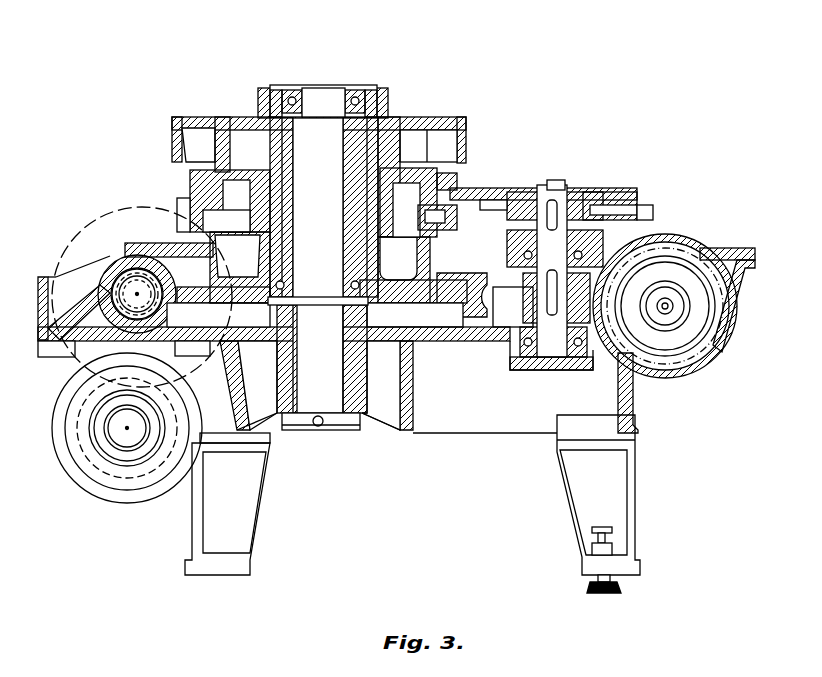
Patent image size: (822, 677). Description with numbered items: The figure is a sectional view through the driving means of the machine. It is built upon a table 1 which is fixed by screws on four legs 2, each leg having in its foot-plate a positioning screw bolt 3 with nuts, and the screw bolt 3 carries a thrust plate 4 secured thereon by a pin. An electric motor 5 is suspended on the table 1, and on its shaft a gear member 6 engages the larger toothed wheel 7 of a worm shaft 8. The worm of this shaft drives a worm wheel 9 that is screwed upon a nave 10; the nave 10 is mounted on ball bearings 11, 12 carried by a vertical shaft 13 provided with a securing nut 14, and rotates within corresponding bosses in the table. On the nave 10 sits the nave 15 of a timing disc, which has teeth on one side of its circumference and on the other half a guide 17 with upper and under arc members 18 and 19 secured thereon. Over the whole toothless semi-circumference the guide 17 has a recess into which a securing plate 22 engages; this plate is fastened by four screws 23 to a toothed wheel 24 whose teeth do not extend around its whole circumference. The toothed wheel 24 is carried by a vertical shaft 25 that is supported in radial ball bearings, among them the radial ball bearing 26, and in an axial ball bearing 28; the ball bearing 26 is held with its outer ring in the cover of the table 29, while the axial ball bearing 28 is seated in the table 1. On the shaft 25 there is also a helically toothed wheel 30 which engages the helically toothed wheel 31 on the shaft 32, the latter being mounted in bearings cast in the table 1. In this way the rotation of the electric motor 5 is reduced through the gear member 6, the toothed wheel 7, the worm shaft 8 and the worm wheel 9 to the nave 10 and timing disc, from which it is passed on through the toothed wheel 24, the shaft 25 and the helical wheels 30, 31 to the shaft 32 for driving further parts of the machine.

The table 1 is at (540, 417).
The legs 2 is at (632, 472).
The positioning screw bolt 3 is at (613, 533).
The thrust plate 4 is at (625, 586).
The electric motor 5 is at (117, 492).
The gear member 6 is at (95, 462).
The larger toothed wheel 7 is at (87, 230).
The worm shaft 8 is at (115, 290).
The worm wheel 9 is at (163, 270).
The nave 10 is at (240, 289).
The ball bearing 11 is at (292, 275).
The ball bearing 12 is at (358, 90).
The vertical shaft 13 is at (302, 398).
The securing nut 14 is at (350, 420).
The nave of timing disc 15 is at (215, 172).
The guide 17 is at (423, 212).
The upper arc member 18 is at (455, 178).
The under arc member 19 is at (449, 224).
The securing plate 22 is at (487, 197).
The screws 23 is at (603, 190).
The toothed wheel 24 is at (641, 205).
The vertical shaft 25 is at (551, 180).
The radial ball bearing 26 is at (520, 262).
The axial ball bearing 28 is at (528, 372).
The cover of the table 29 is at (696, 240).
The helically toothed wheel 30 is at (482, 345).
The helically toothed wheel 31 is at (697, 358).
The shaft 32 is at (672, 318).